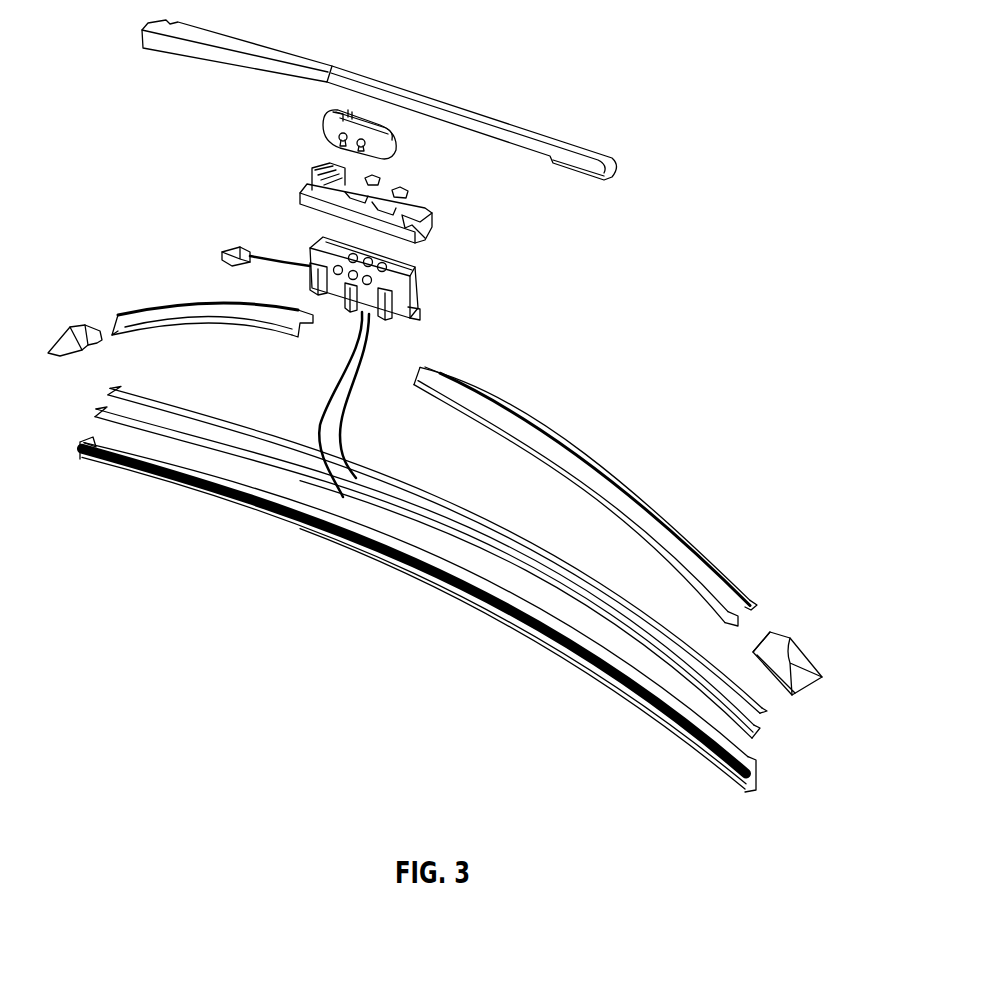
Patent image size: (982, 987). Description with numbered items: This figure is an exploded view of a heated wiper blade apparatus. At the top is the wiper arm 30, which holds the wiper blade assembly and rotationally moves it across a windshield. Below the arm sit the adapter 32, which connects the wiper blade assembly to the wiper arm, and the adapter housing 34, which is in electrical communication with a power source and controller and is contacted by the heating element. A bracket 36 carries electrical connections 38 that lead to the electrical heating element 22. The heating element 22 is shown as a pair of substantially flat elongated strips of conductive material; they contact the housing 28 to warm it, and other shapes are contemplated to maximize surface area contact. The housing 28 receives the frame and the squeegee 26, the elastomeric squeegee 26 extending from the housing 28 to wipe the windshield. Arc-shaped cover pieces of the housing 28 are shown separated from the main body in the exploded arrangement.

The electrical heating element 22 is at (767, 709).
The squeegee 26 is at (753, 775).
The housing 28 is at (207, 310).
The wiper arm 30 is at (473, 113).
The adapter 32 is at (327, 130).
The adapter housing 34 is at (427, 233).
The bracket 36 is at (418, 307).
The electrical connections 38 is at (223, 250).